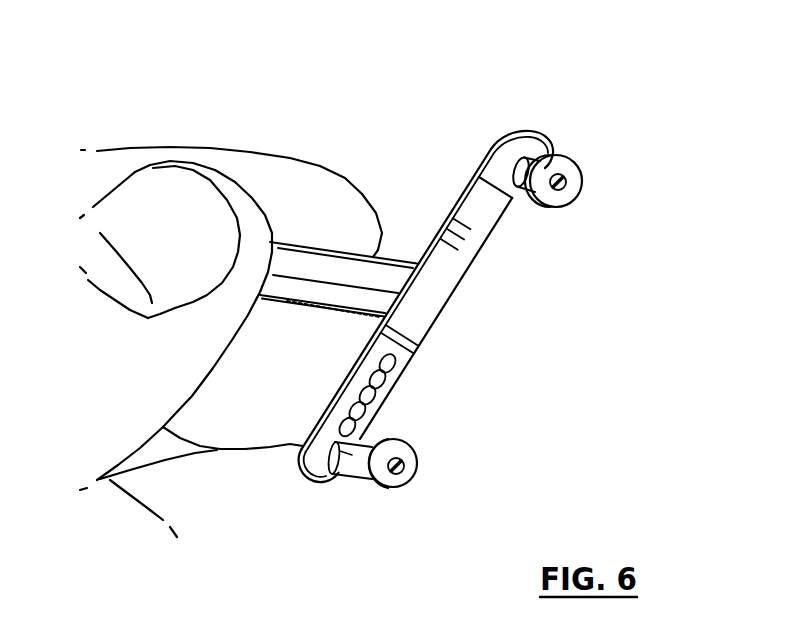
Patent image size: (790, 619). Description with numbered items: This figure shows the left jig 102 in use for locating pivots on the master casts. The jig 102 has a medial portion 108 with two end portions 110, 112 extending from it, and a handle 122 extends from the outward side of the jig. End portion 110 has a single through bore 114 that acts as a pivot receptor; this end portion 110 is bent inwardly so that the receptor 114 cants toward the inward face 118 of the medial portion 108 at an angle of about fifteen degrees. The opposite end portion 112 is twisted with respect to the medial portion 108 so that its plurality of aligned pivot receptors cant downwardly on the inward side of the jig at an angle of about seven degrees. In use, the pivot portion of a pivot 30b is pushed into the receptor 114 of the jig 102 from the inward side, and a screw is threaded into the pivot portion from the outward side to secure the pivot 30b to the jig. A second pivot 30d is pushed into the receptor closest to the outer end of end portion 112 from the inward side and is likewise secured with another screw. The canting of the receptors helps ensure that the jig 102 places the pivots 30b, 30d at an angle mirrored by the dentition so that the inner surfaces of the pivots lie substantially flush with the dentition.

The left jig 102 is at (406, 237).
The medial portion 108 is at (427, 294).
The end portion 110 is at (508, 99).
The end portion 112 is at (292, 526).
The through bore 114 is at (519, 214).
The inward face 118 is at (440, 302).
The handle 122 is at (338, 170).
The pivot 30b is at (612, 158).
The pivot 30d is at (372, 521).